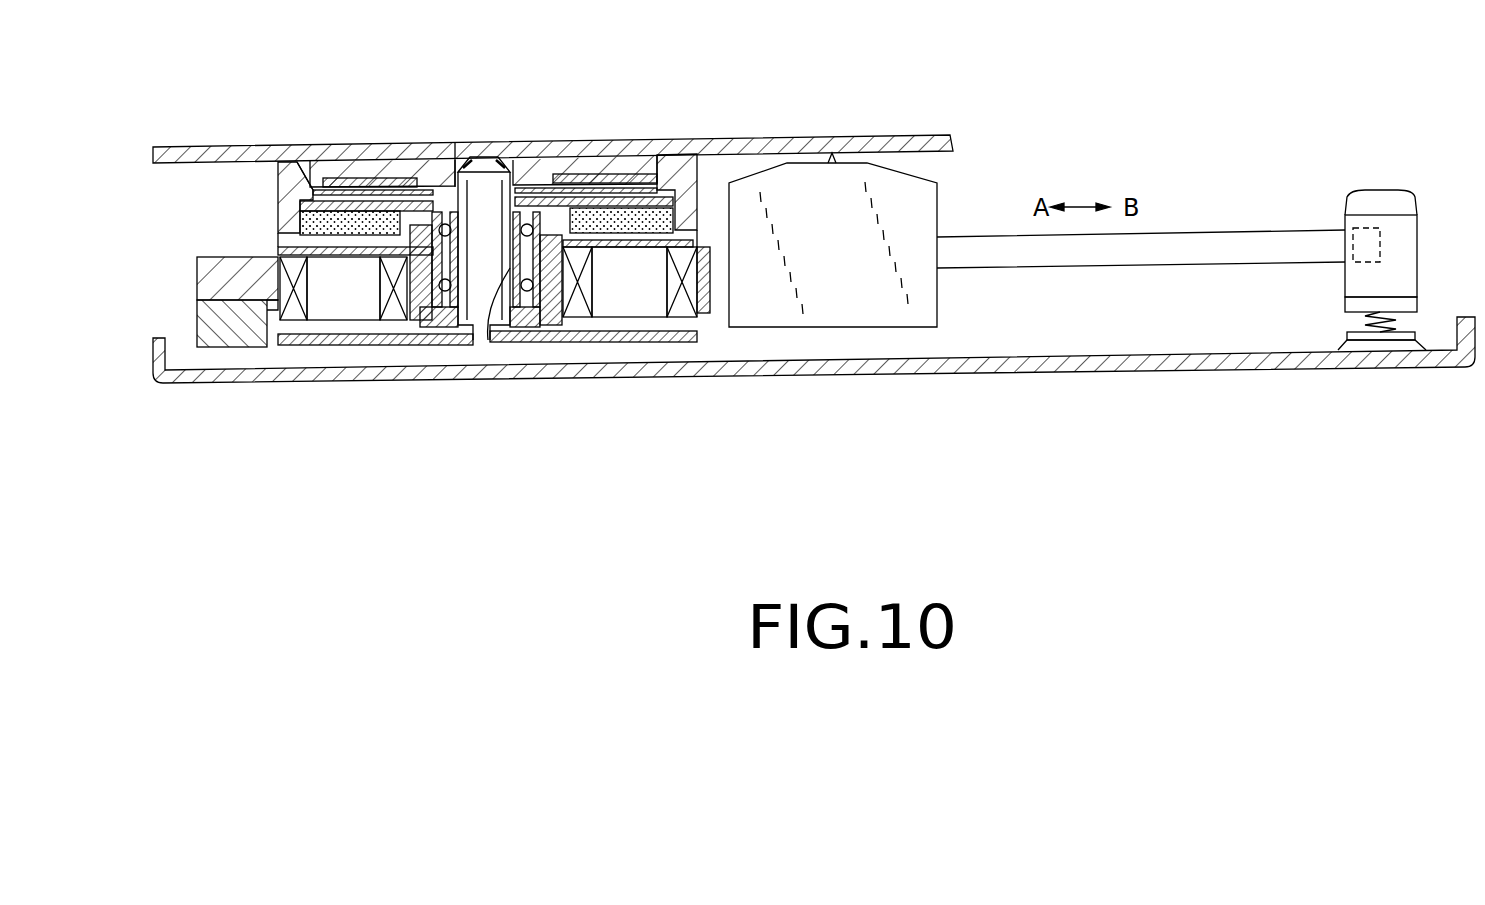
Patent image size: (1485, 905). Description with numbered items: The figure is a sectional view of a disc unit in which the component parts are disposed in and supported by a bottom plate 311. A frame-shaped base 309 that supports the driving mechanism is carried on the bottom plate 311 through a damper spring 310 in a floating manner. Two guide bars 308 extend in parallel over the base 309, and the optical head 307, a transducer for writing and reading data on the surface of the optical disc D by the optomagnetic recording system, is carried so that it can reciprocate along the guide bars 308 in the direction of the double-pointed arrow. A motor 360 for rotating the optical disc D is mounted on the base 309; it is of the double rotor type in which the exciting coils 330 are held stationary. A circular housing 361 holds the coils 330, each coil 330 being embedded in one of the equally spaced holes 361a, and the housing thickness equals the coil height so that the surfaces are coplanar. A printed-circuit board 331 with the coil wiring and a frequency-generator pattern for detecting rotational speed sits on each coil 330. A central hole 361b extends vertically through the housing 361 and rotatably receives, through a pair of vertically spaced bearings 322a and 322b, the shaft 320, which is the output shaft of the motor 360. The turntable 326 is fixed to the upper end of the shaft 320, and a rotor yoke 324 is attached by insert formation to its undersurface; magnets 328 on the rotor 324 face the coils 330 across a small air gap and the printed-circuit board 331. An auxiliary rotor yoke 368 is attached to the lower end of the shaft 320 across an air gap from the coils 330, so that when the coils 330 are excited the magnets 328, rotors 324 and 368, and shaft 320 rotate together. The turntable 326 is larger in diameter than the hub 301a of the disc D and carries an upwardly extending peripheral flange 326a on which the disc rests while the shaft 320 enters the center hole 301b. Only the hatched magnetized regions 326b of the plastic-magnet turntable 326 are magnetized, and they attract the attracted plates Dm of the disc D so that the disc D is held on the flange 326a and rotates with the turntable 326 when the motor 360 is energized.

The hub 301a is at (660, 158).
The center hole 301b is at (462, 145).
The optical disc D is at (417, 153).
The attracted plates Dm is at (368, 186).
The shaft 320 is at (494, 155).
The rotor yoke 324 is at (319, 160).
The turntable 326 is at (298, 224).
The ring-shaped projection 326a is at (682, 215).
The magnetized regions 326b is at (622, 187).
The magnets 328 is at (288, 210).
The exciting coils 330 is at (280, 303).
The printed-circuit board 331 is at (323, 310).
The housing 361 is at (202, 275).
The holes 361a is at (357, 310).
The hole 361b is at (488, 345).
The bearing 322a is at (447, 318).
The bearing 322b is at (427, 318).
The auxiliary rotor yoke 368 is at (620, 337).
The motor 360 is at (703, 323).
The optical head 307 is at (918, 317).
The guide bars 308 is at (1218, 233).
The base 309 is at (1410, 240).
The damper spring 310 is at (1393, 325).
The bottom plate 311 is at (1130, 366).